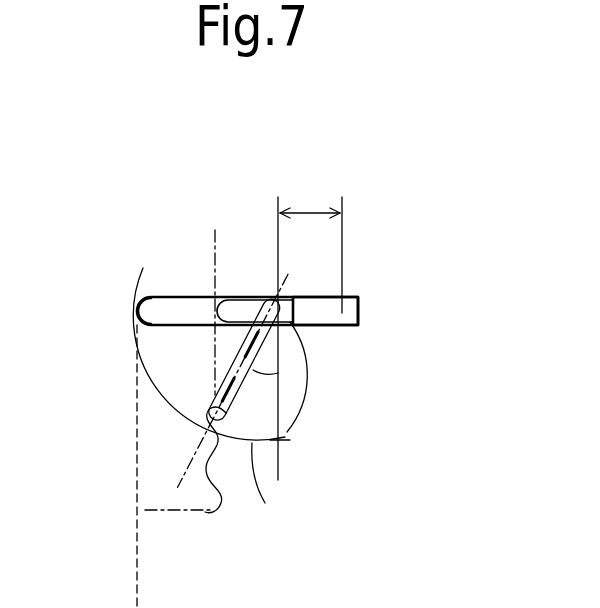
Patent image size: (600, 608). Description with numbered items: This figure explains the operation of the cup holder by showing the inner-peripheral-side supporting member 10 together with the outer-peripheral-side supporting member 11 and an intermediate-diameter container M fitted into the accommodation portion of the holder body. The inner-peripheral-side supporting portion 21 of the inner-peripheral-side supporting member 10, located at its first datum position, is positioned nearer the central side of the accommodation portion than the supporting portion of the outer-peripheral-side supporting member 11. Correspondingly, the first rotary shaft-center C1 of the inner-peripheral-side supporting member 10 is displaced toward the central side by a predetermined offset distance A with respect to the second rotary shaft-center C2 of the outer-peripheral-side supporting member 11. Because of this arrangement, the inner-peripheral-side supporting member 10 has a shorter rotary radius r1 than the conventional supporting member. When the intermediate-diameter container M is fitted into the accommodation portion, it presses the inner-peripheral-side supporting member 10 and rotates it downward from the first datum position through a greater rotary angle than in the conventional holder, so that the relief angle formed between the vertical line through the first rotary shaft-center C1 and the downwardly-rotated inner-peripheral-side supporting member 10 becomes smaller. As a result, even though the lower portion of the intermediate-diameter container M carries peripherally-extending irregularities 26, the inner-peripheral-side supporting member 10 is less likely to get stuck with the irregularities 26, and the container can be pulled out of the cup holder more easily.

The inner-peripheral-side supporting member 10 is at (170, 290).
The outer-peripheral-side supporting member 11 is at (343, 298).
The inner-peripheral-side supporting portion 21 is at (155, 310).
The peripherally-extending irregularities 26 is at (218, 463).
The first rotary shaft-center C1 is at (292, 298).
The second rotary shaft-center C2 is at (341, 313).
The intermediate-diameter container M is at (215, 268).
The offset distance A is at (311, 241).
The rotary radius r1 is at (289, 381).